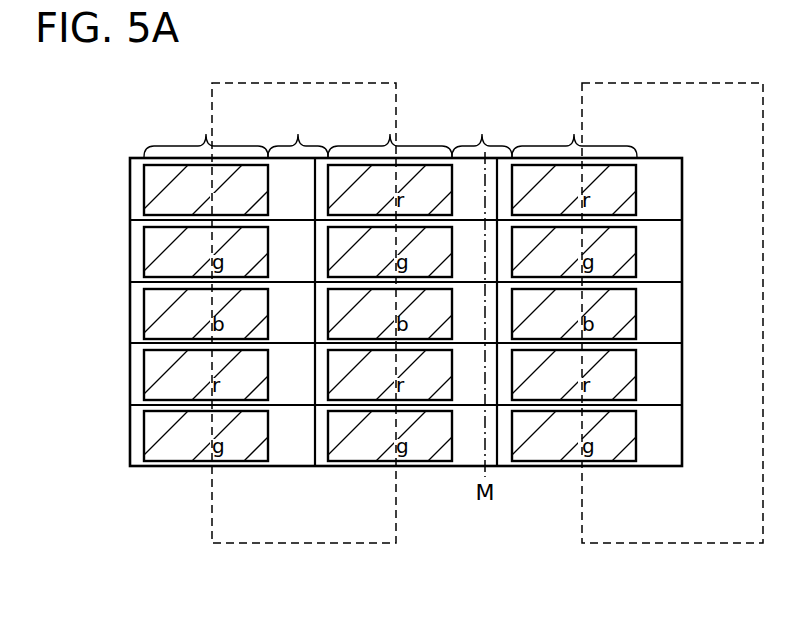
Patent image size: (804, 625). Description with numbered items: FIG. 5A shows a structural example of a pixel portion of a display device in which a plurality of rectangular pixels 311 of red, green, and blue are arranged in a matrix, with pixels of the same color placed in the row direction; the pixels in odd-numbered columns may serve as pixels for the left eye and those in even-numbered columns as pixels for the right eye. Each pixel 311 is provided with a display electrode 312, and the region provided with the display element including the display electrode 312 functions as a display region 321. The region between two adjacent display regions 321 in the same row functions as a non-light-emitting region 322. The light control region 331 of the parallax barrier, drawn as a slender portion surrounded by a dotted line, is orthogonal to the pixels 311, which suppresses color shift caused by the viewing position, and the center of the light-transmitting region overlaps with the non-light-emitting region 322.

The pixel 311 is at (137, 173).
The display electrode 312 is at (152, 197).
The display region 321 is at (390, 131).
The non-light-emitting region 322 is at (390, 130).
The light control region 331 is at (302, 543).